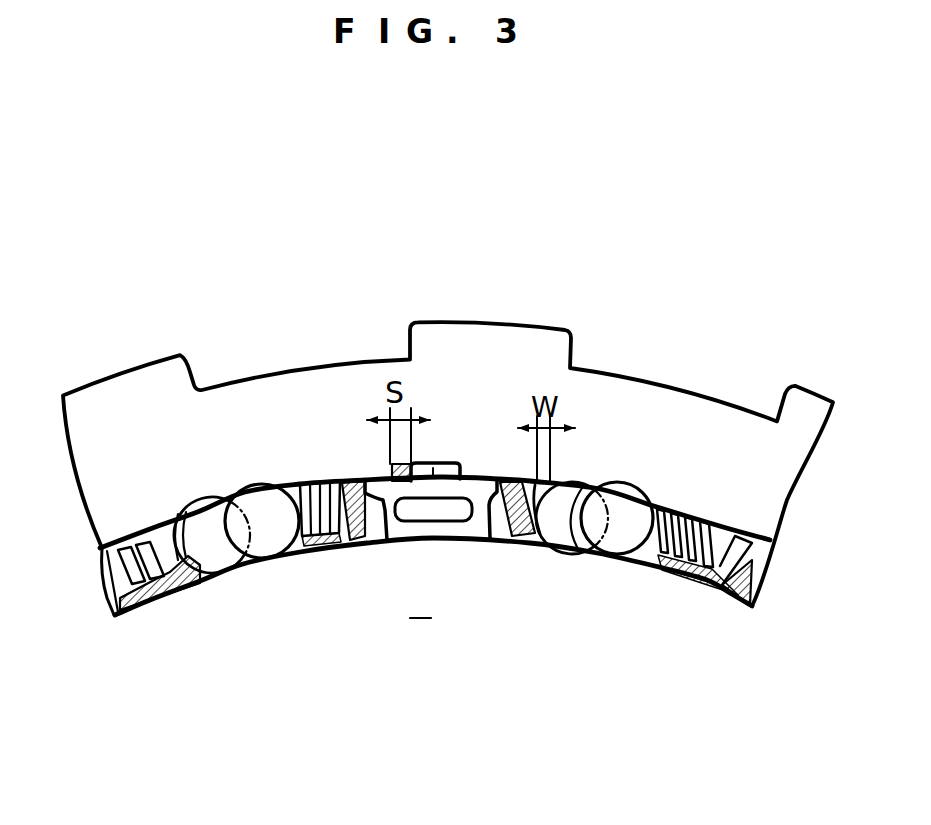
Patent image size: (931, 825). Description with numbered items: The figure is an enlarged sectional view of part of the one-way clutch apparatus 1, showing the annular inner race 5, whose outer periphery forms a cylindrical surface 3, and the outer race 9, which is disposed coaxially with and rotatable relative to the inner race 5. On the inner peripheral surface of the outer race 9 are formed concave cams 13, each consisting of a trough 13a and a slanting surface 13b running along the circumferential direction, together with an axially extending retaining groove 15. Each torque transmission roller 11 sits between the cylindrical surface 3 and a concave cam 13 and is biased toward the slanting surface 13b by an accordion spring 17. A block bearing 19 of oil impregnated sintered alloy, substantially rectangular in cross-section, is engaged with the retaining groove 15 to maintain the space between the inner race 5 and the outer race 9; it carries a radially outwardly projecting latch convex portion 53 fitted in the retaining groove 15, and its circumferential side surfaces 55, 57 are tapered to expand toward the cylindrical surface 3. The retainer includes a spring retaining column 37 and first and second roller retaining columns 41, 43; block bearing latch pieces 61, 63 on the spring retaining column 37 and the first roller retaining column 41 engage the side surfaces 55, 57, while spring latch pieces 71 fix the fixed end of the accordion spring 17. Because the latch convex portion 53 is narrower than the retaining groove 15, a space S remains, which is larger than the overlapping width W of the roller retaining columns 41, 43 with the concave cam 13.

The one-way clutch apparatus 1 is at (88, 258).
The cylindrical surface 3 is at (657, 568).
The inner race 5 is at (431, 549).
The outer race 9 is at (223, 371).
The torque transmission roller 11 is at (266, 485).
The concave cam 13 is at (212, 500).
The trough 13a is at (630, 497).
The slanting surface 13b is at (594, 480).
The retaining groove 15 is at (392, 465).
The accordion spring 17 is at (287, 562).
The block bearing 19 is at (473, 464).
The spring retaining column 37 is at (313, 560).
The first roller retaining column 41 is at (532, 560).
The second roller retaining column 43 is at (139, 600).
The latch convex portion 53 is at (433, 462).
The circumferential side surface 55 is at (383, 545).
The circumferential side surface 57 is at (478, 560).
The block bearing latch piece 61 is at (350, 555).
The block bearing latch piece 63 is at (510, 560).
The spring latch piece 71 is at (336, 482).